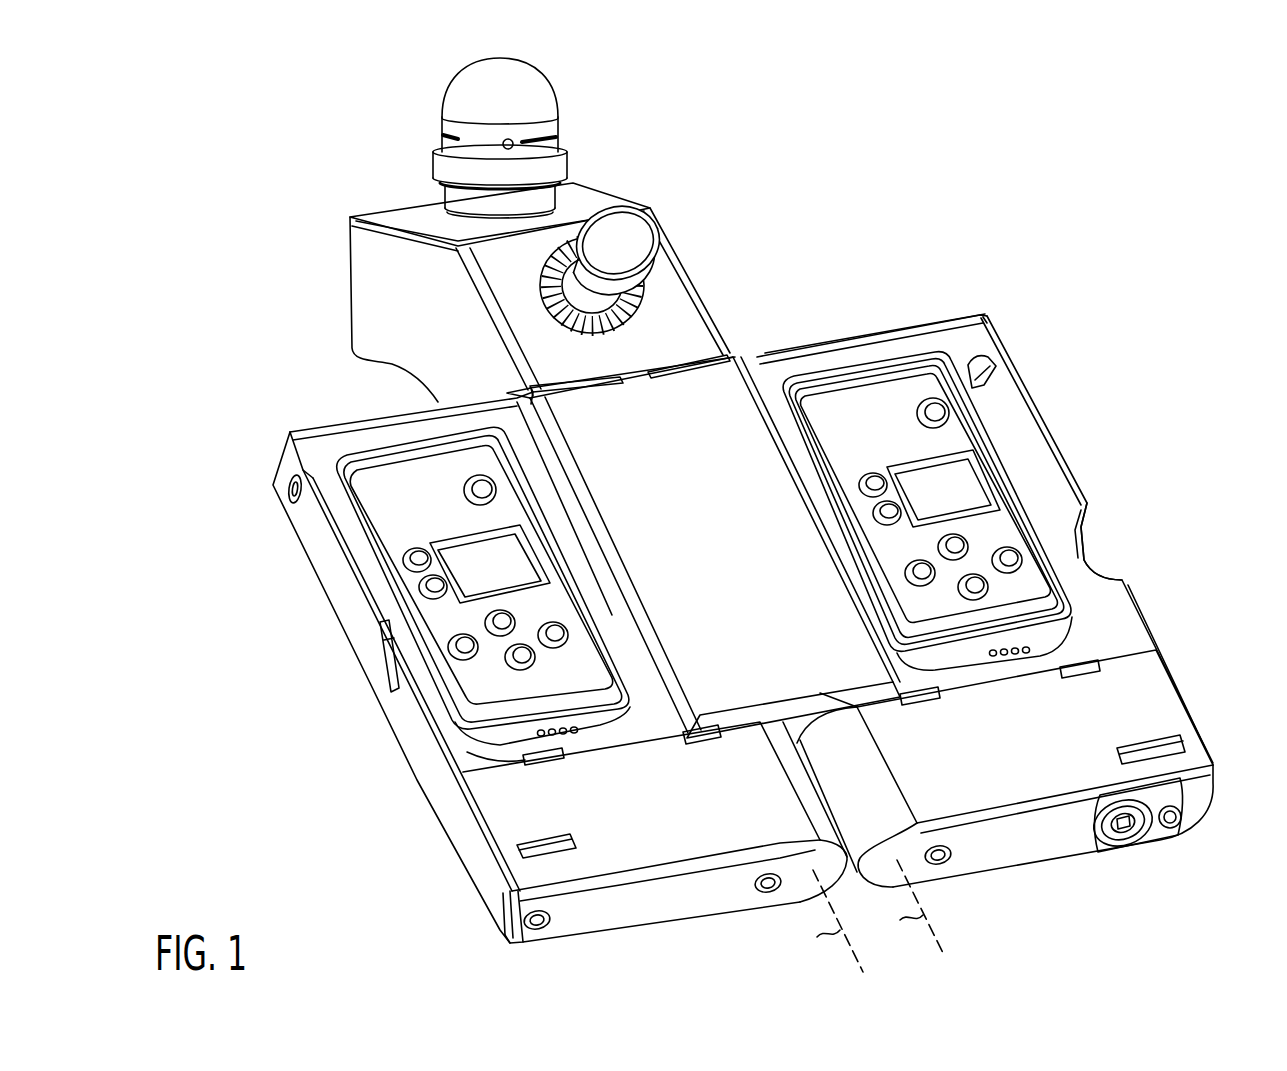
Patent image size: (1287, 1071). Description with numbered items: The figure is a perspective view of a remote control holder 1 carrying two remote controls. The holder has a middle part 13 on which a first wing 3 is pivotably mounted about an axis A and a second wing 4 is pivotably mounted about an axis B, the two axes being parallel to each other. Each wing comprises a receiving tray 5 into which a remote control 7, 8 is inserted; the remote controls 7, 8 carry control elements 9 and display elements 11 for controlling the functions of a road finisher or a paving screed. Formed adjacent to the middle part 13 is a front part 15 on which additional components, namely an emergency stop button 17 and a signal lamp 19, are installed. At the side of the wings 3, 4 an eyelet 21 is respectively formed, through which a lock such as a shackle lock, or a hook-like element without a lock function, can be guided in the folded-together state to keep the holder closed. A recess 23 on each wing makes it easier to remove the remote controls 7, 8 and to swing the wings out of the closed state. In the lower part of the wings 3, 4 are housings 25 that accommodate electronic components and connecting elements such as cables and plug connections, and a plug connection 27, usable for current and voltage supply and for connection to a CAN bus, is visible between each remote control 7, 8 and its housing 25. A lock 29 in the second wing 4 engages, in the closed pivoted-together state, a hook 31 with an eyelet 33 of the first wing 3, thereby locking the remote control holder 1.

The remote control holder 1 is at (252, 266).
The first wing 3 is at (310, 573).
The second wing 4 is at (900, 318).
The receiving tray 5 is at (318, 460).
The remote control 7 is at (483, 718).
The remote control 8 is at (1085, 614).
The control elements 9 is at (464, 491).
The display elements 11 is at (505, 576).
The middle part 13 is at (723, 518).
The front part 15 is at (694, 276).
The emergency stop button 17 is at (655, 238).
The signal lamp 19 is at (560, 88).
The eyelet 21 is at (290, 490).
The recess 23 is at (393, 680).
The housing 25 is at (721, 811).
The plug connection 27 is at (549, 757).
The lock 29 is at (1097, 838).
The hook 31 is at (1183, 742).
The eyelet 33 is at (520, 847).